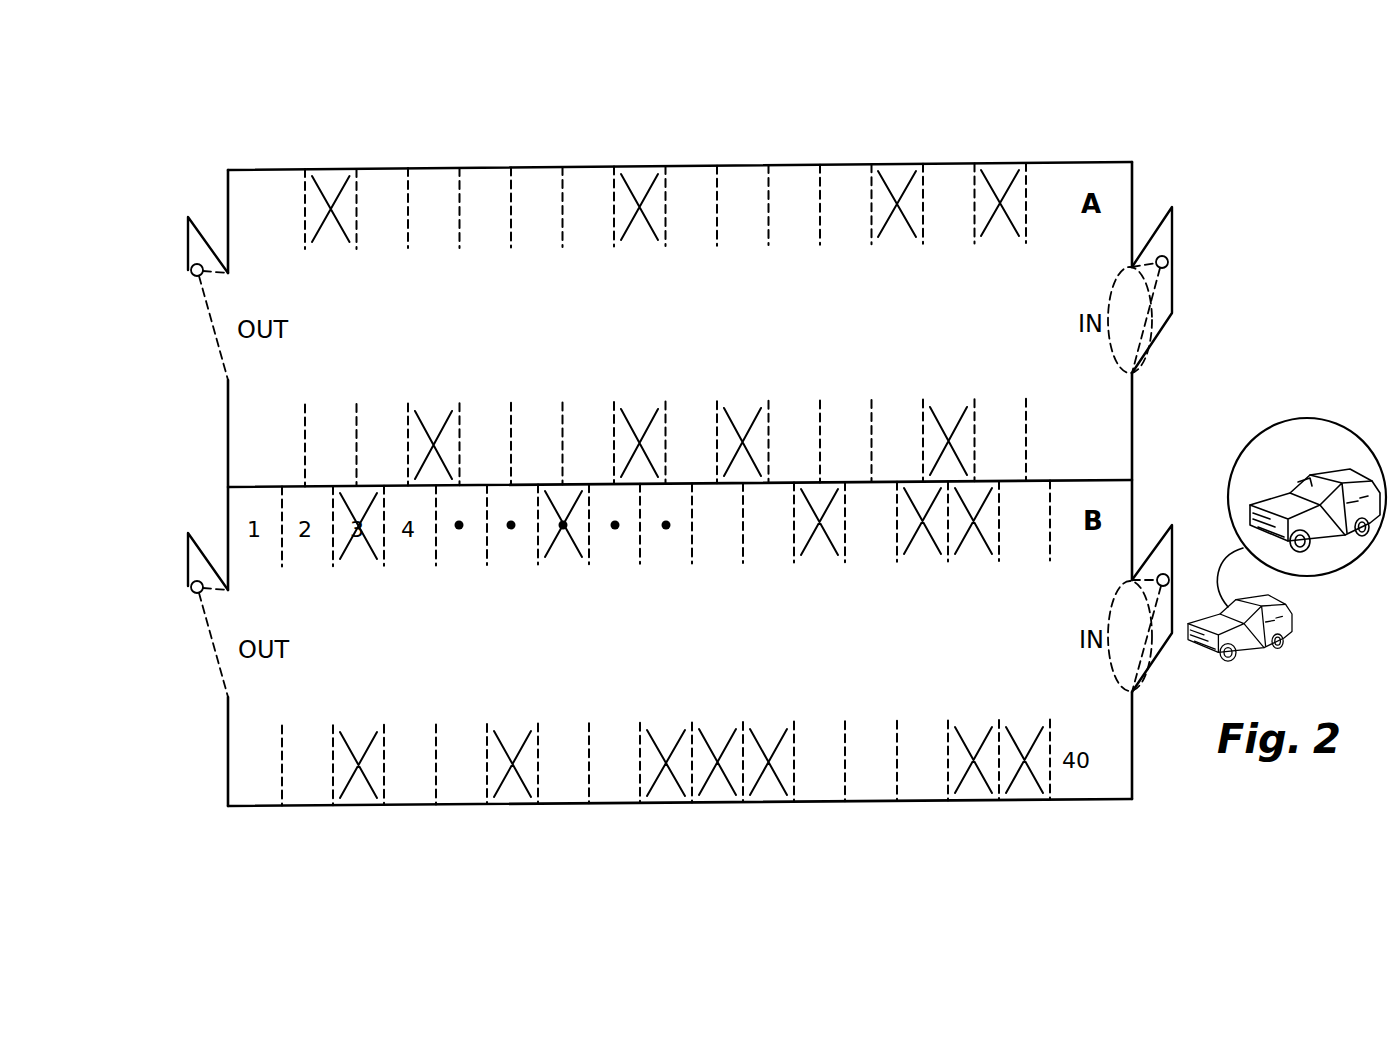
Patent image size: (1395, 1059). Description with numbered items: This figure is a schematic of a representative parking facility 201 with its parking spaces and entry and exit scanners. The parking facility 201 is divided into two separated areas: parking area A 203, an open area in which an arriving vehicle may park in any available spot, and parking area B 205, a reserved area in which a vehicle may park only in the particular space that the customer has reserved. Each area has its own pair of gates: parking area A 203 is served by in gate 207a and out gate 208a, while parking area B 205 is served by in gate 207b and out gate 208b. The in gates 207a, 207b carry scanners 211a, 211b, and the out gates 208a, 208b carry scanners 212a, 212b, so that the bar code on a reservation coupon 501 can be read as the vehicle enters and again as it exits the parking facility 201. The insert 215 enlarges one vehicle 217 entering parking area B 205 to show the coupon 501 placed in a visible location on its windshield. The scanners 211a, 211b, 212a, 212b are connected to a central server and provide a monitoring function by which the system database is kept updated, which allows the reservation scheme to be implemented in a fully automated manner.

The parking facility 201 is at (1212, 104).
The parking area A 203 is at (277, 182).
The parking area B 205 is at (264, 795).
The in gate 207a is at (1158, 223).
The in gate 207b is at (1158, 542).
The out gate 208a is at (207, 248).
The out gate 208b is at (207, 563).
The scanner 211a is at (1169, 262).
The scanner 211b is at (1160, 579).
The scanner 212a is at (197, 277).
The scanner 212b is at (197, 594).
The insert 215 is at (1257, 453).
The vehicle 217 is at (1322, 462).
The reservation coupon 501 is at (1305, 480).